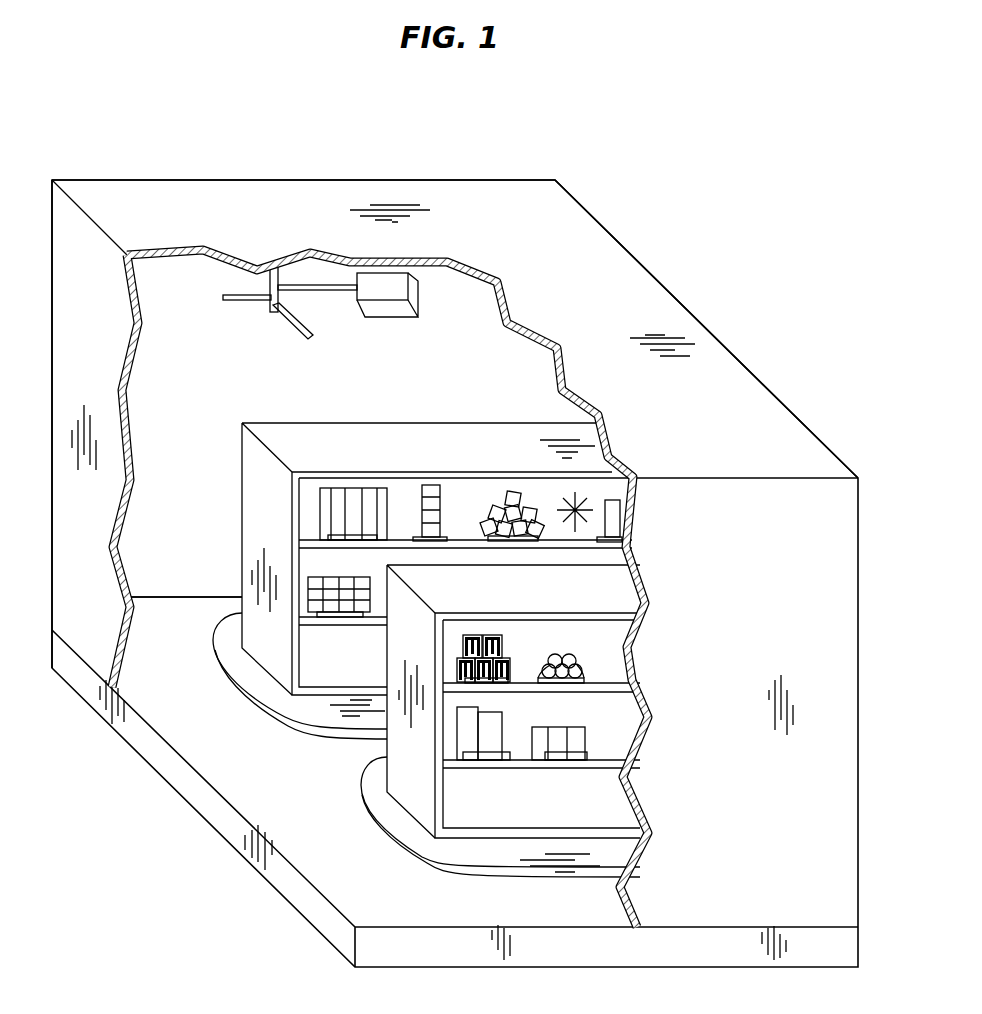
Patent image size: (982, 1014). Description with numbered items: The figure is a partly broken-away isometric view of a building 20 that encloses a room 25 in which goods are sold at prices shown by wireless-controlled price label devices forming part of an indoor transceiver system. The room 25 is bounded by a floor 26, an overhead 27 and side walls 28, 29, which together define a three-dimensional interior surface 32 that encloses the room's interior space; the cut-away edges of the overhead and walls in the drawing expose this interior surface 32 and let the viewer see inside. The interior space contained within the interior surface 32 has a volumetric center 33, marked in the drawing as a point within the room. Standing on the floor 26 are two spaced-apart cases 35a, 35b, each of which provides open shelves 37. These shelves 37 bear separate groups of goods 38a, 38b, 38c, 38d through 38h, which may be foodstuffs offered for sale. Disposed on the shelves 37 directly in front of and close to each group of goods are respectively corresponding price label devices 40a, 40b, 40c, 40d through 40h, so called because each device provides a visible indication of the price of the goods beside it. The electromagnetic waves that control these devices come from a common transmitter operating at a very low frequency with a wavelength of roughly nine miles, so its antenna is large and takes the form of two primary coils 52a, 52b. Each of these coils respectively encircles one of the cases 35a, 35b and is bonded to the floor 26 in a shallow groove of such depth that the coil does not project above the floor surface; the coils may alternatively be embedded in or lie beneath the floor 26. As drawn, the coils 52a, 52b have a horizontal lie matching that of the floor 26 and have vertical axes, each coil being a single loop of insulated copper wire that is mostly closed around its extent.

The building 20 is at (178, 869).
The room 25 is at (480, 312).
The floor 26 is at (380, 897).
The overhead 27 is at (202, 196).
The side wall 28 is at (83, 630).
The side wall 29 is at (192, 436).
The interior surface 32 is at (162, 262).
The volumetric center 33 is at (566, 506).
The case 35a is at (474, 444).
The case 35b is at (400, 745).
The open shelves 37 is at (458, 548).
The group of goods 38a is at (330, 490).
The group of goods 38b is at (429, 485).
The group of goods 38c is at (515, 492).
The group of goods 38d is at (613, 500).
The group of goods 38h is at (587, 738).
The price label device 40a is at (330, 538).
The price label device 40b is at (412, 536).
The price label device 40c is at (543, 532).
The price label device 40d is at (632, 522).
The price label device 40h is at (603, 750).
The primary coil 52a is at (236, 679).
The primary coil 52b is at (370, 828).